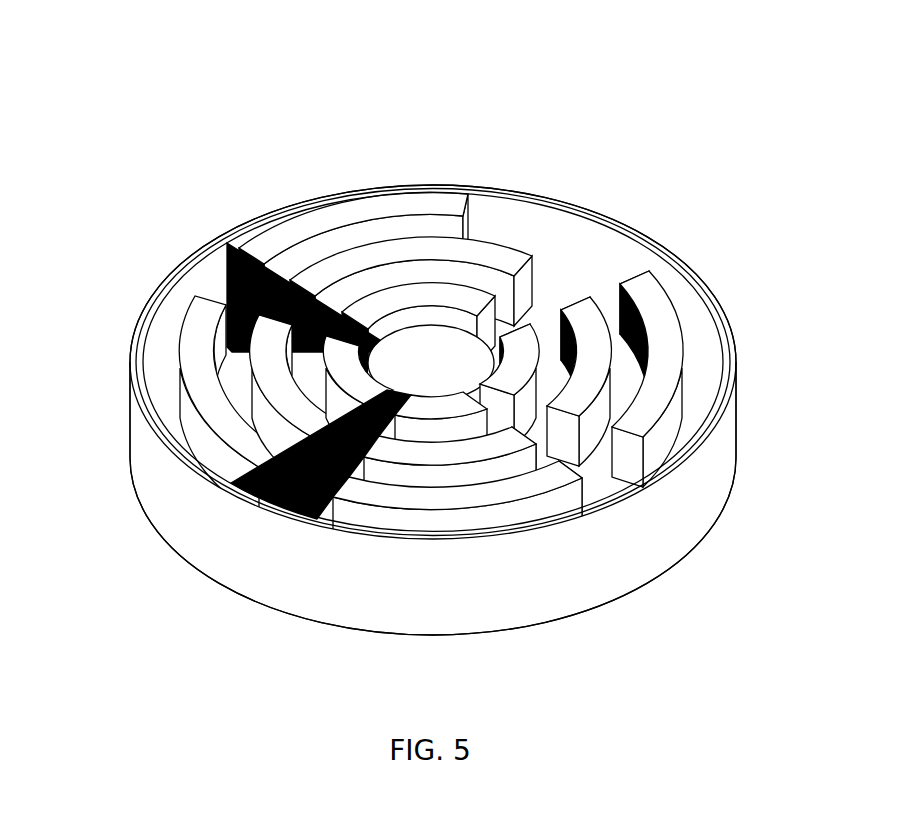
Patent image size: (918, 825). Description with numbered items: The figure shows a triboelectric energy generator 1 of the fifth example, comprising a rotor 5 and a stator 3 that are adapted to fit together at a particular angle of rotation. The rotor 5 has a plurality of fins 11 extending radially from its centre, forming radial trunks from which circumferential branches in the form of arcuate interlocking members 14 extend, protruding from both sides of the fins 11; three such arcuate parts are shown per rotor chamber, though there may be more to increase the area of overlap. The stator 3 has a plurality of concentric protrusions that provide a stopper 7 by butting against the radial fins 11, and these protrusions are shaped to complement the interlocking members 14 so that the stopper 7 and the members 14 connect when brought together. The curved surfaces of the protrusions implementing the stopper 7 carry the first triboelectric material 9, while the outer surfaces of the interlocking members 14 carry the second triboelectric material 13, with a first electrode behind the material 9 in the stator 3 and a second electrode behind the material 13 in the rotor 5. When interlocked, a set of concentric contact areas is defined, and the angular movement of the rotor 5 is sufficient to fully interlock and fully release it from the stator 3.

The triboelectric energy generator 1 is at (328, 160).
The stator 3 is at (583, 228).
The rotor 5 is at (462, 377).
The stopper 7 is at (660, 417).
The first triboelectric material 9 is at (232, 333).
The fins 11 is at (630, 255).
The second triboelectric material 13 is at (238, 432).
The arcuate interlocking members 14 is at (702, 330).